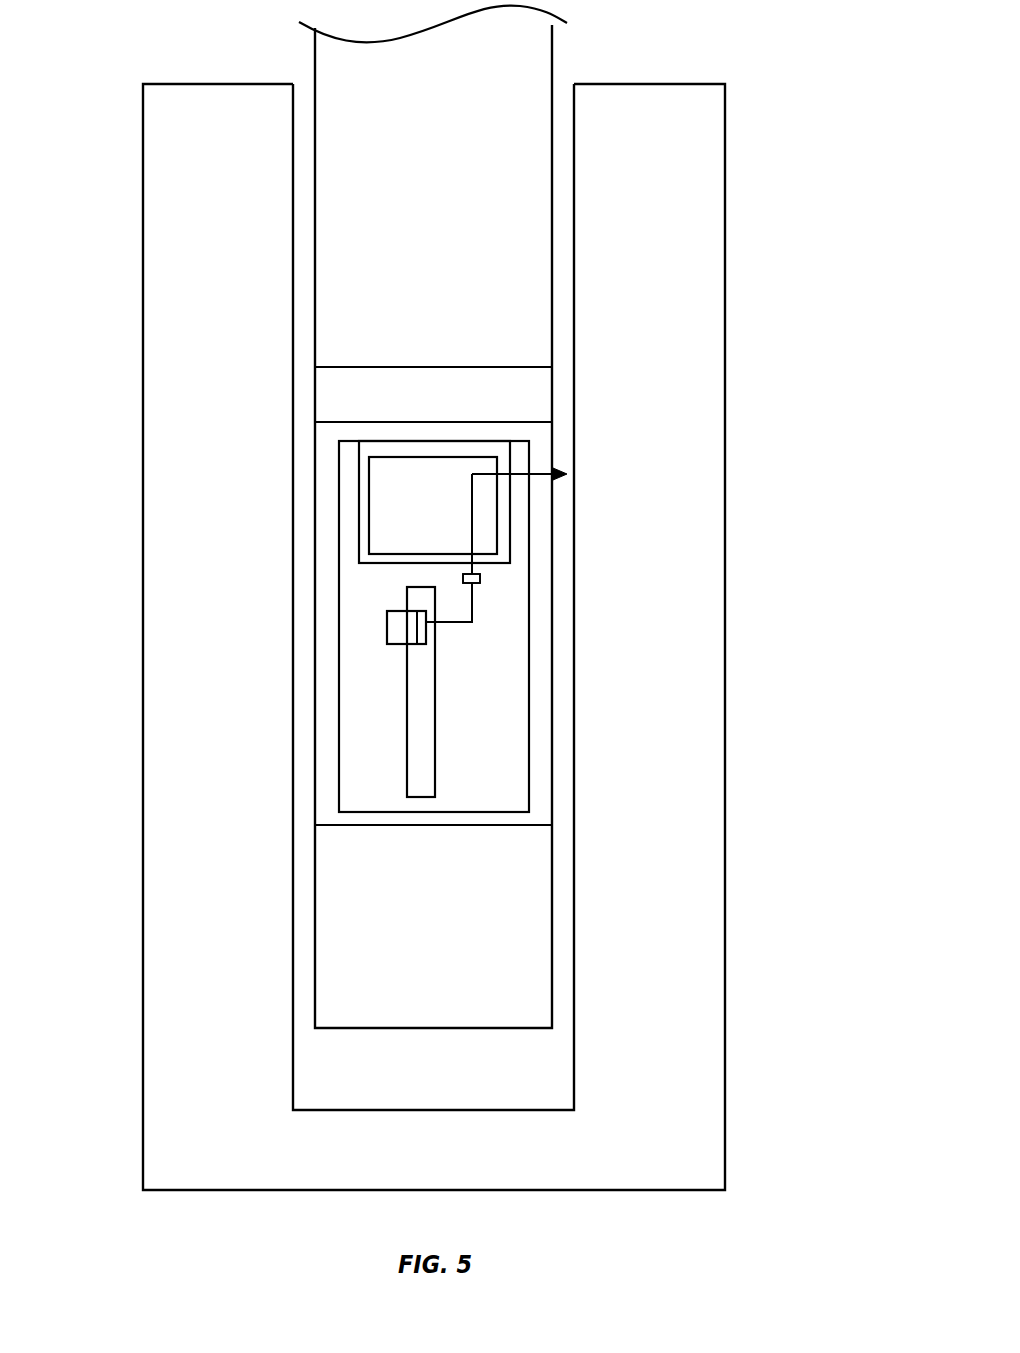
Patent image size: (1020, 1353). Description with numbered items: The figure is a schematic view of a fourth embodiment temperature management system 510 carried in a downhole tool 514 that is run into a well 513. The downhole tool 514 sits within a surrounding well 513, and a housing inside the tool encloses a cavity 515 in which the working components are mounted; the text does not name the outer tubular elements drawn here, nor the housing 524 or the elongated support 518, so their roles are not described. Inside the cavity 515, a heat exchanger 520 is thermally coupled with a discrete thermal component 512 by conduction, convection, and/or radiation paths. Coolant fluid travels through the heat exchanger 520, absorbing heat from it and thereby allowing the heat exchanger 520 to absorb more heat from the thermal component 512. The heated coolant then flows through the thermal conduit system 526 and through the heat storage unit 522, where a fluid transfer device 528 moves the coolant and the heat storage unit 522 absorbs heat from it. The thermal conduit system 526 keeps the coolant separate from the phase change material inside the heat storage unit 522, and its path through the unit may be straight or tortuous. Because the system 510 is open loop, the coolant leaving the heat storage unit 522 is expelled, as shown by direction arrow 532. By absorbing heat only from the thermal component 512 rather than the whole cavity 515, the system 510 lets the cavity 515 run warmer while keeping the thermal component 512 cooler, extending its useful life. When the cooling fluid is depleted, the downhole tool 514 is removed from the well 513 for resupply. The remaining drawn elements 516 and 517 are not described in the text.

The temperature management system 510 is at (498, 605).
The thermal component 512 is at (420, 637).
The well 513 is at (540, 754).
The downhole tool 514 is at (552, 433).
The cavity 515 is at (359, 724).
The outer tubing 516 is at (553, 231).
The casing 517 is at (158, 339).
The support member 518 is at (435, 733).
The heat exchanger 520 is at (387, 628).
The heat storage unit 522 is at (455, 519).
The electronics housing 524 is at (510, 505).
The thermal conduit system 526 is at (475, 614).
The fluid transfer device 528 is at (480, 579).
The direction arrow 532 is at (567, 470).